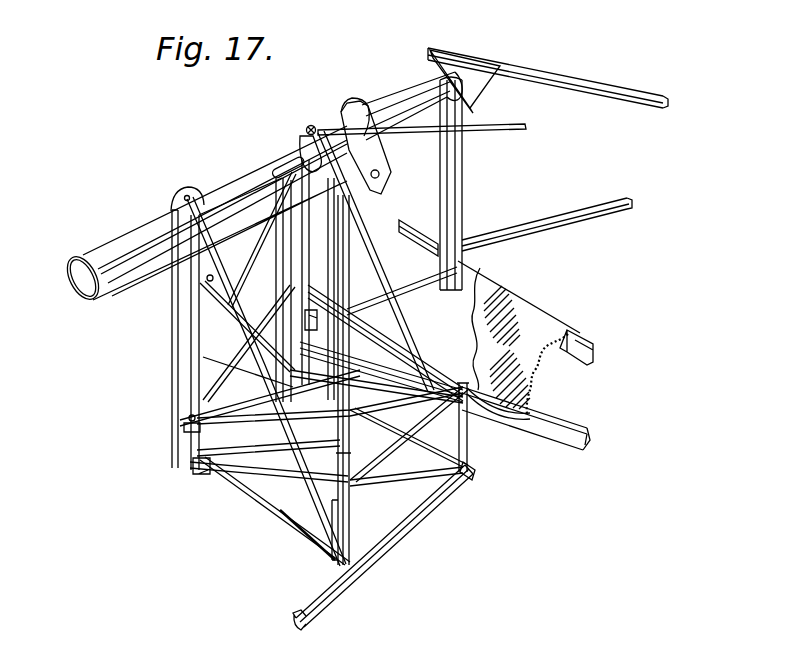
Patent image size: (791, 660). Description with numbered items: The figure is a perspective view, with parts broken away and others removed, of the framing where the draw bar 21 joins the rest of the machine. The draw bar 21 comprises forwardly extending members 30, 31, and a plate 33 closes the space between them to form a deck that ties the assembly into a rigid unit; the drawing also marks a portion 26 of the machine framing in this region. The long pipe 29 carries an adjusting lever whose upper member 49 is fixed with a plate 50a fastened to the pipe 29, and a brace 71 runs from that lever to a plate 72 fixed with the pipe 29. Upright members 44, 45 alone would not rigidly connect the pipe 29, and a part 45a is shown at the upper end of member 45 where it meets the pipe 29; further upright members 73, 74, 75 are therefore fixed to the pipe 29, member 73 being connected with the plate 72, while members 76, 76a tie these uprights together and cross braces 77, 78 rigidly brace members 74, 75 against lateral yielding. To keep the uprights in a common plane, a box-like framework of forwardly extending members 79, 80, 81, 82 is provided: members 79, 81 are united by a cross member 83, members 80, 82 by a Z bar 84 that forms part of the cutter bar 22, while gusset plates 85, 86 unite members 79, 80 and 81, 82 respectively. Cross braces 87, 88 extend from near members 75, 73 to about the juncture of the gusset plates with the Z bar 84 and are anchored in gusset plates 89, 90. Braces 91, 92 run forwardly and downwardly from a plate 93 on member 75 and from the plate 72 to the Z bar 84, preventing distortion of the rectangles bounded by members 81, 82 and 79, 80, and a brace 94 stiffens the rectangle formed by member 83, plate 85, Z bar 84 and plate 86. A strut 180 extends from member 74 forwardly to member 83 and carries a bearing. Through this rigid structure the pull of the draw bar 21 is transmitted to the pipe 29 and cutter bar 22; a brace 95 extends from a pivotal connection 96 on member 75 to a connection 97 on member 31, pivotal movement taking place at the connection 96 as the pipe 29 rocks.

The draw bar 21 is at (544, 320).
The cutter bar 22 is at (354, 594).
The base frame 26 is at (472, 492).
The pipe 29 is at (251, 165).
The forwardly extending member 30 is at (592, 335).
The forwardly extending member 31 is at (553, 408).
The plate 33 is at (558, 331).
The upright member 44 is at (470, 176).
The upright member 45 is at (375, 195).
The collar 45a is at (378, 92).
The upper member 49 is at (628, 81).
The plate 50a is at (478, 84).
The brace 71 is at (500, 125).
The plate 72 is at (308, 126).
The upright member 73 is at (300, 146).
The upright member 74 is at (292, 282).
The upright member 75 is at (176, 320).
The tie member 76 is at (235, 406).
The tie member 76a is at (195, 472).
The cross brace 77 is at (266, 250).
The cross brace 78 is at (234, 334).
The forwardly extending member 79 is at (430, 365).
The forwardly extending member 80 is at (370, 382).
The forwardly extending member 81 is at (337, 430).
The forwardly extending member 82 is at (265, 505).
The cross member 83 is at (430, 413).
The Z bar 84 is at (410, 520).
The gusset plate 85 is at (455, 436).
The gusset plate 86 is at (312, 538).
The cross brace 87 is at (258, 472).
The cross brace 88 is at (366, 392).
The gusset plate 89 is at (441, 480).
The gusset plate 90 is at (346, 530).
The brace 91 is at (244, 328).
The brace 92 is at (380, 276).
The plate 93 is at (188, 185).
The brace 94 is at (420, 452).
The brace 95 is at (190, 417).
The pivotal connection 96 is at (185, 427).
The connection 97 is at (522, 438).
The strut 180 is at (308, 322).